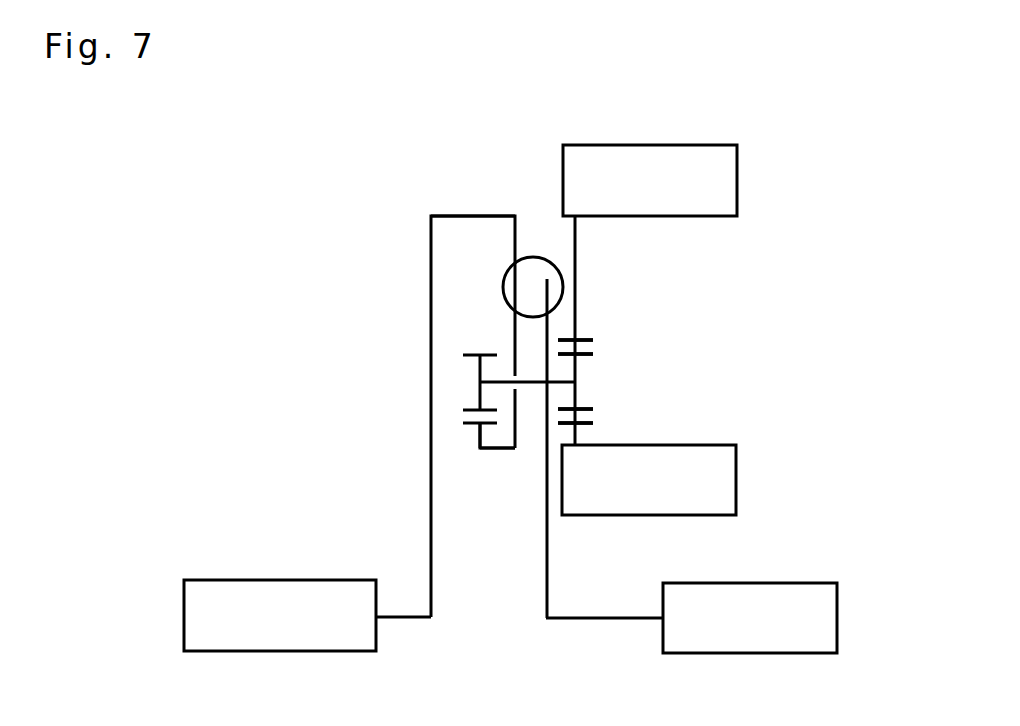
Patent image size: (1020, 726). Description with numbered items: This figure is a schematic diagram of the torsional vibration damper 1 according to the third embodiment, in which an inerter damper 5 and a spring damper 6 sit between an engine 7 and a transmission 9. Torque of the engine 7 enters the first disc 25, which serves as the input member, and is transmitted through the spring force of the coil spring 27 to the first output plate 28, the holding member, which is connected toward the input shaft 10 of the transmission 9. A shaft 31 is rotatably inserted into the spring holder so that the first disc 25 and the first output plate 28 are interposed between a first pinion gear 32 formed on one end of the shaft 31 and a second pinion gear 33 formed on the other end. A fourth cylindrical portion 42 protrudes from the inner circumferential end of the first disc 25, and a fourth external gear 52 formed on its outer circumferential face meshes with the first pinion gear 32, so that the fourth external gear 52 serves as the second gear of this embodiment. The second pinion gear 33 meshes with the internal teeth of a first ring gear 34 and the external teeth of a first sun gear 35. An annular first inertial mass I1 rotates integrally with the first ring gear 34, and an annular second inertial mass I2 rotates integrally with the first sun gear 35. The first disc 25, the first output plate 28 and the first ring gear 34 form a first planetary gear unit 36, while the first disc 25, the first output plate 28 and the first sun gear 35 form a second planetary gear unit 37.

The torsional vibration damper 1 is at (349, 234).
The inerter damper 5 is at (492, 489).
The spring damper 6 is at (540, 214).
The engine 7 is at (285, 580).
The transmission 9 is at (839, 614).
The input shaft 10 is at (608, 620).
The first disc 25 is at (515, 238).
The coil spring 27 is at (503, 287).
The first output plate 28 is at (545, 606).
The shaft 31 is at (530, 388).
The first pinion gear 32 is at (480, 370).
The second pinion gear 33 is at (590, 356).
The first ring gear 34 is at (587, 338).
The first sun gear 35 is at (585, 423).
The first planetary gear unit 36 is at (686, 410).
The second planetary gear unit 37 is at (691, 286).
The fourth cylindrical portion 42 is at (503, 450).
The fourth external gear 52 is at (470, 430).
The first inertial mass I1 is at (738, 180).
The second inertial mass I2 is at (737, 478).